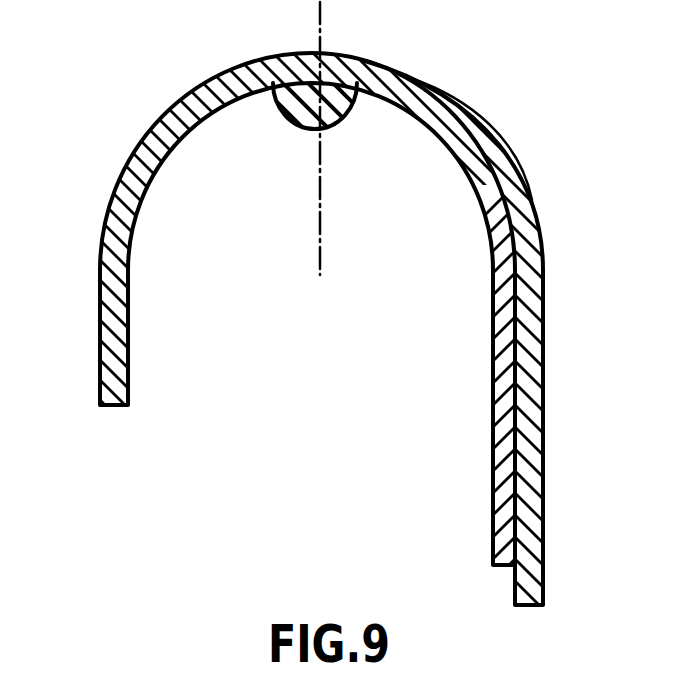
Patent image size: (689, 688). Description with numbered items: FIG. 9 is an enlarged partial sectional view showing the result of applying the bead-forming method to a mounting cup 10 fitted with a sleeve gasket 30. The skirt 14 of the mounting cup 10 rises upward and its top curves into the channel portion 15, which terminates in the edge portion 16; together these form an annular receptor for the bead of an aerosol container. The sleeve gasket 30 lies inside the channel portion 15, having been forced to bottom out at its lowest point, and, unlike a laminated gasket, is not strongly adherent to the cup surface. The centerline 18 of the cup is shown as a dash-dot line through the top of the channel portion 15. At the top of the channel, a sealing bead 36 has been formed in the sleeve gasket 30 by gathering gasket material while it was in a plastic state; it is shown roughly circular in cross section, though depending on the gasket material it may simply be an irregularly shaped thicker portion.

The mounting cup 10 is at (492, 110).
The skirt 14 is at (533, 442).
The channel portion 15 is at (169, 117).
The edge portion 16 is at (104, 356).
The centerline 18 is at (322, 44).
The sleeve gasket 30 is at (494, 402).
The sealing bead 36 is at (300, 130).